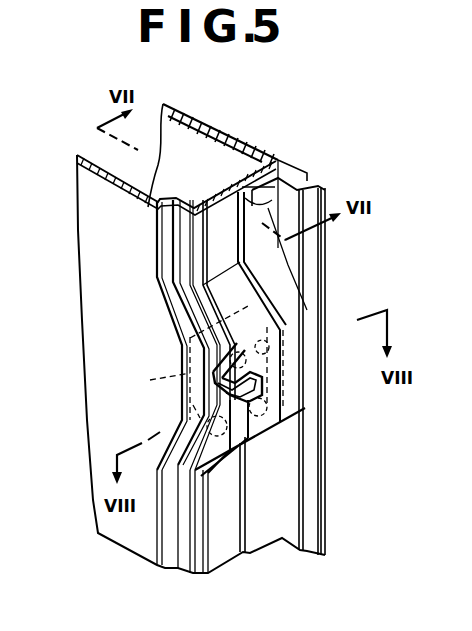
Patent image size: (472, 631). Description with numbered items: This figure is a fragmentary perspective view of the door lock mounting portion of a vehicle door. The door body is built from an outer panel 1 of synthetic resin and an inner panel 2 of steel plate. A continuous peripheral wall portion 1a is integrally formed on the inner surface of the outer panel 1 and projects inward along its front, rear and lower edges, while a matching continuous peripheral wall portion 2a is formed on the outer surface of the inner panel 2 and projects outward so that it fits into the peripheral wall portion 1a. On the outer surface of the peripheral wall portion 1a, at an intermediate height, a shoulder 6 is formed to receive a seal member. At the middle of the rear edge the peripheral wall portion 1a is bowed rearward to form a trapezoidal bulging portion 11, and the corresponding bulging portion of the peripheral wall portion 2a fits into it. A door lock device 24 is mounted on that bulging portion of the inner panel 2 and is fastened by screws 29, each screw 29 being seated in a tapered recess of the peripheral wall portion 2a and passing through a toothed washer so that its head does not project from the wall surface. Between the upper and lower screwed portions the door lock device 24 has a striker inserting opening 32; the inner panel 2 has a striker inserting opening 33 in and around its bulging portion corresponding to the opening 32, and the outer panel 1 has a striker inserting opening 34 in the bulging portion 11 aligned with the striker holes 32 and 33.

The outer panel 1 is at (210, 124).
The peripheral wall portion 1a is at (247, 197).
The inner panel 2 is at (85, 382).
The peripheral wall portion 2a is at (218, 188).
The shoulder 6 is at (282, 179).
The bulging portion 11 is at (280, 325).
The door lock device 24 is at (187, 366).
The screw 29 is at (283, 350).
The striker inserting opening 32 is at (213, 398).
The striker inserting opening 33 is at (220, 457).
The striker inserting opening 34 is at (267, 384).